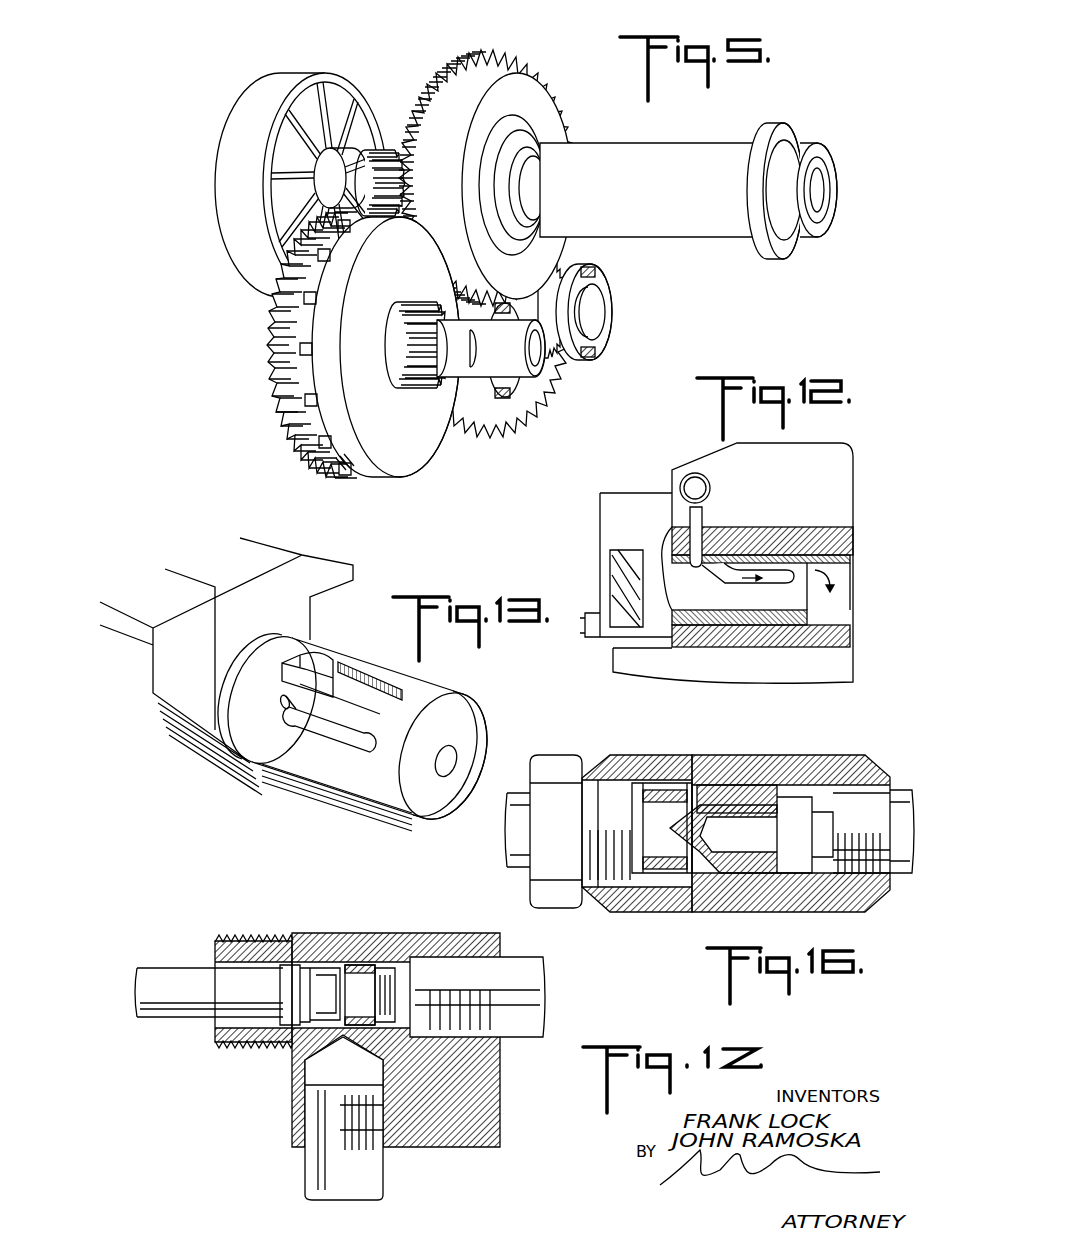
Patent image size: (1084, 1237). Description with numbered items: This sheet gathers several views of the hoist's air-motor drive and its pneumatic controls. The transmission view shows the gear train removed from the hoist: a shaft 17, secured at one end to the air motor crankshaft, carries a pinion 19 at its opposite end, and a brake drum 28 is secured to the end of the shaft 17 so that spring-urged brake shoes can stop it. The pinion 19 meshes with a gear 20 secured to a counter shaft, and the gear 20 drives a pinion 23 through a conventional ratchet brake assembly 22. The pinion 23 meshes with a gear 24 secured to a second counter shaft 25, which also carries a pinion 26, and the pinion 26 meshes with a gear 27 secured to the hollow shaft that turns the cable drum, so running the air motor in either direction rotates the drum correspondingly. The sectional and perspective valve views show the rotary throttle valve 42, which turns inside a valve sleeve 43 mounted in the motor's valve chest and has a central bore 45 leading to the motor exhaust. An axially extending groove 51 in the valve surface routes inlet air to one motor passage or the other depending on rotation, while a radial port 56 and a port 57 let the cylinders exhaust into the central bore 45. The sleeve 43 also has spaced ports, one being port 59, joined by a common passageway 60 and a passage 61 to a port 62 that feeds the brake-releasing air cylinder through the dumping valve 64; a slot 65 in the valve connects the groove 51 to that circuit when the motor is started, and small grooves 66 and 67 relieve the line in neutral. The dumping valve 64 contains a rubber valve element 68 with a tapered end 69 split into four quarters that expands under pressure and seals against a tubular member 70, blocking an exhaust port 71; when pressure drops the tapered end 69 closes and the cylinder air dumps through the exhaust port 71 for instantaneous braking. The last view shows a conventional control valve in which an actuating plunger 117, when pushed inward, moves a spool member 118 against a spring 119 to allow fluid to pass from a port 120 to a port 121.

In FIG. 5, the shaft 17 is at (633, 238).
In FIG. 5, the pinion 19 is at (384, 150).
In FIG. 5, the gear 20 is at (283, 430).
In FIG. 5, the ratchet brake assembly 22 is at (344, 474).
In FIG. 5, the pinion 23 is at (413, 385).
In FIG. 5, the gear 24 is at (490, 435).
In FIG. 5, the second counter shaft 25 is at (600, 314).
In FIG. 5, the pinion 26 is at (562, 353).
In FIG. 5, the gear 27 is at (530, 72).
In FIG. 5, the brake drum 28 is at (222, 222).
In FIG. 12, the rotary throttle valve 42 is at (730, 622).
In FIG. 13, the rotary throttle valve 42 is at (368, 800).
In FIG. 12, the valve sleeve 43 is at (847, 538).
In FIG. 13, the central bore 45 is at (450, 752).
In FIG. 13, the axially extending groove 51 is at (356, 676).
In FIG. 12, the radial port 56 is at (780, 565).
In FIG. 13, the port 57 is at (328, 742).
In FIG. 12, the port 59 is at (705, 565).
In FIG. 12, the common passageway 60 is at (708, 508).
In FIG. 12, the passage 61 is at (690, 513).
In FIG. 12, the port 62 is at (680, 473).
In FIG. 16, the dumping valve 64 is at (775, 727).
In FIG. 13, the slot 65 is at (300, 665).
In FIG. 13, the small groove 66 is at (284, 712).
In FIG. 12, the small groove 67 is at (722, 560).
In FIG. 16, the rubber valve element 68 is at (720, 807).
In FIG. 16, the tapered end 69 is at (687, 860).
In FIG. 16, the tubular member 70 is at (650, 880).
In FIG. 16, the exhaust port 71 is at (650, 757).
In FIG. 17, the actuating plunger 117 is at (155, 977).
In FIG. 17, the spool member 118 is at (363, 960).
In FIG. 17, the spring 119 is at (393, 967).
In FIG. 17, the port 120 is at (417, 960).
In FIG. 17, the port 121 is at (323, 1071).